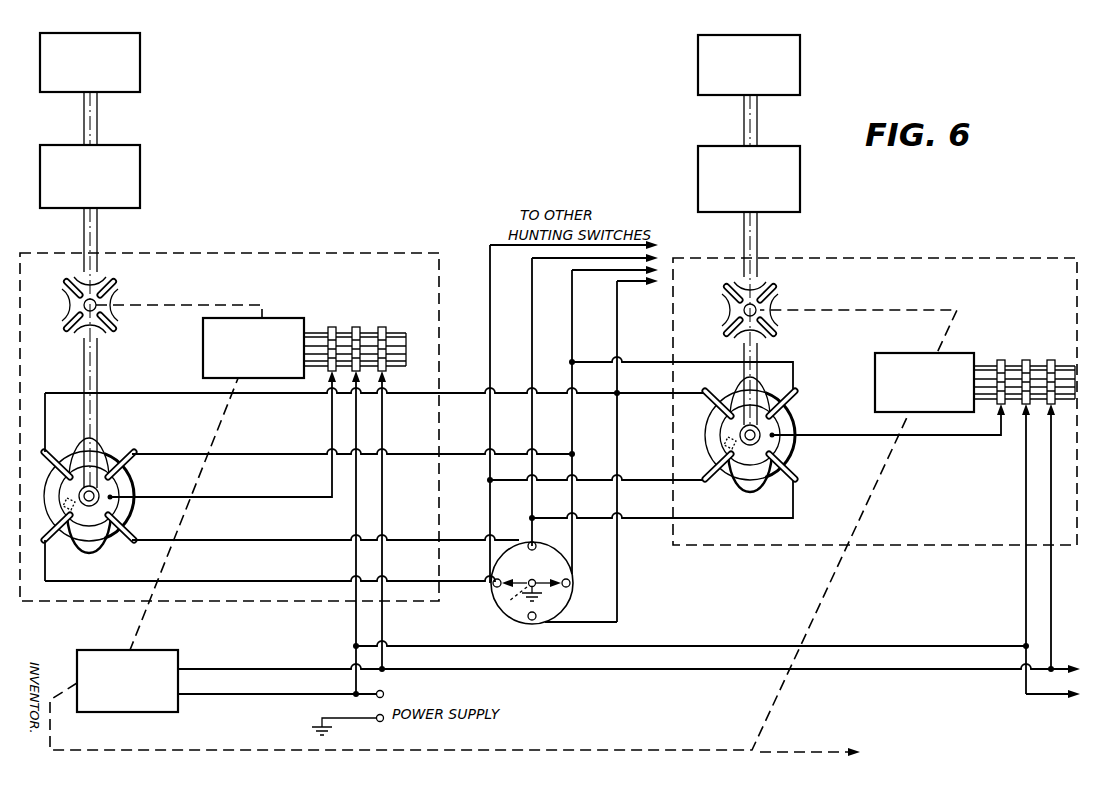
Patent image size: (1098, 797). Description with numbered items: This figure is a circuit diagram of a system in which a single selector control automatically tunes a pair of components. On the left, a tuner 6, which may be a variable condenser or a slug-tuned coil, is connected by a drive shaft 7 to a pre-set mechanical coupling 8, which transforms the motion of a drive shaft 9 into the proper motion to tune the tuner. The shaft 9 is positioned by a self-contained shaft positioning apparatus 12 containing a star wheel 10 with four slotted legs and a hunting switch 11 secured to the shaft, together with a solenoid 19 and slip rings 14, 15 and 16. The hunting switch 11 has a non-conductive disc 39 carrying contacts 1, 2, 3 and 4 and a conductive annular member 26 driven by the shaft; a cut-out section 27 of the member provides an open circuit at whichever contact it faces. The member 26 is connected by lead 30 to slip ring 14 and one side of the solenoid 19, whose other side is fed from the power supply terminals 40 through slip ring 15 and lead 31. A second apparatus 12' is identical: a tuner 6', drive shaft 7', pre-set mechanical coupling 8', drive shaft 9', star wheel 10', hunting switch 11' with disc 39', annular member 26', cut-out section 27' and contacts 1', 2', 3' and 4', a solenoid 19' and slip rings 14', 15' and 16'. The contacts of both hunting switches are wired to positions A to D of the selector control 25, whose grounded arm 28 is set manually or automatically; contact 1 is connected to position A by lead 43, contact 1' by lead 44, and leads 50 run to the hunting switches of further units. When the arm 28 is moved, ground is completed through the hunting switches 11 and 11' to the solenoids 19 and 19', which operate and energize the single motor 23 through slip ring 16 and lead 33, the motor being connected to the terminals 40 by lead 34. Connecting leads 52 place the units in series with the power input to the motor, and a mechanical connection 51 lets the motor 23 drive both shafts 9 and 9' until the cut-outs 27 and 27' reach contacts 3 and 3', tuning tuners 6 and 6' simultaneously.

The tuner 6 is at (103, 62).
The drive shaft 7 is at (100, 118).
The pre-set mechanical coupling 8 is at (103, 176).
The drive shaft 9 is at (98, 348).
The star wheel 10 is at (75, 305).
The shaft positioning apparatus 12 is at (270, 240).
The solenoid 19 is at (253, 334).
The slip ring 14 is at (355, 336).
The slip ring 15 is at (357, 336).
The slip ring 16 is at (387, 336).
The hunting switch 11 is at (89, 486).
The cut-out section 27 is at (85, 495).
The disc 39 is at (137, 487).
The annular member 26 is at (48, 512).
The contact 4 is at (49, 435).
The contact 3 is at (340, 455).
The contact 1 is at (51, 548).
The contact 2 is at (313, 528).
The lead 30 is at (243, 505).
The lead 31 is at (356, 508).
The lead 43 is at (243, 583).
The leads 50 is at (604, 337).
The lead 44 is at (662, 481).
The selector control 25 is at (574, 600).
The arm 28 is at (550, 573).
The lead 33 is at (281, 668).
The lead 34 is at (226, 694).
The terminals 40 is at (366, 716).
The motor 23 is at (110, 713).
The tuner 6' is at (763, 65).
The drive shaft 7' is at (765, 120).
The pre-set mechanical coupling 8' is at (764, 179).
The drive shaft 9' is at (762, 318).
The star wheel 10' is at (771, 310).
The shaft positioning apparatus 12' is at (909, 242).
The solenoid 19' is at (924, 371).
The slip ring 14' is at (923, 385).
The slip ring 15' is at (1022, 515).
The slip ring 16' is at (1049, 502).
The hunting switch 11' is at (750, 423).
The cut-out section 27' is at (744, 435).
The disc 39' is at (801, 421).
The annular member 26' is at (708, 439).
The contact 4' is at (711, 396).
The contact 3' is at (793, 396).
The contact 1' is at (710, 466).
The contact 2' is at (793, 466).
The connecting leads 52 is at (1066, 691).
The mechanical connection 51 is at (822, 752).